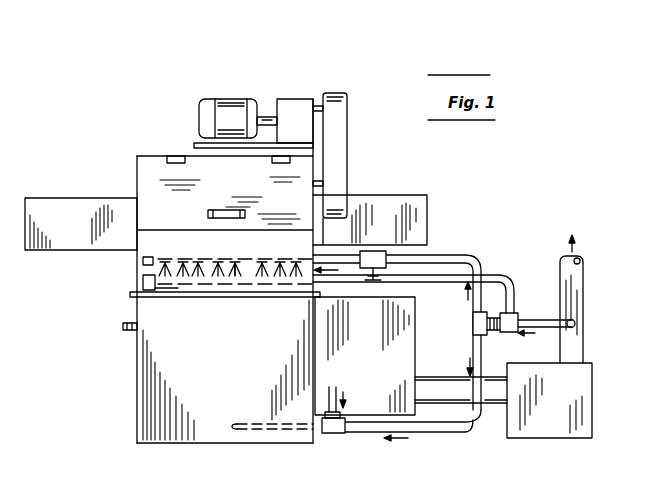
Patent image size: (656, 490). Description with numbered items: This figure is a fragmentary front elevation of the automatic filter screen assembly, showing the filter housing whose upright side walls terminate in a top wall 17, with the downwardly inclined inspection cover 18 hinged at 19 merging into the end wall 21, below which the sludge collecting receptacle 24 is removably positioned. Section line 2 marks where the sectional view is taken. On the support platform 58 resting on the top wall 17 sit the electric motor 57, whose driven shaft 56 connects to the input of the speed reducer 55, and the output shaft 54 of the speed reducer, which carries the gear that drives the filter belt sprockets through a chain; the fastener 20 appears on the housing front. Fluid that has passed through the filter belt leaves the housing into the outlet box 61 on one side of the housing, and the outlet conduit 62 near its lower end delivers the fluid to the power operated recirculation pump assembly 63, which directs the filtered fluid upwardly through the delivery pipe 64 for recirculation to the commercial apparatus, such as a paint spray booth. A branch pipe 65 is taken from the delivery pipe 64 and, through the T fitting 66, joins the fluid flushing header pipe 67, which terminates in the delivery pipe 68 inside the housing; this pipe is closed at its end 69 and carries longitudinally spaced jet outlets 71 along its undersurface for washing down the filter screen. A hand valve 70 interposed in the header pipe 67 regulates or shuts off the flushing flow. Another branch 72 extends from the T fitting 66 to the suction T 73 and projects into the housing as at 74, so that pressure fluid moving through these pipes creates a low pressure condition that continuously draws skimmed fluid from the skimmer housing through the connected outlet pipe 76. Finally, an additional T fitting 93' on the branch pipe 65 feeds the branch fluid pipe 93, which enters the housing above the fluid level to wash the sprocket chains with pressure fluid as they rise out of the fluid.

The section line 2- 2 is at (226, 75).
The top wall 17 is at (143, 156).
The inspection cover 18 is at (172, 180).
The hinge 19 is at (178, 163).
The fastener 20 is at (226, 210).
The end wall 21 is at (137, 248).
The sludge collecting receptacle 24 is at (146, 402).
The output shaft 54 is at (330, 93).
The speed reducer 55 is at (296, 115).
The driven shaft 56 is at (266, 117).
The electric motor 57 is at (228, 99).
The support platform 58 is at (194, 146).
The outlet box 61 is at (420, 326).
The outlet conduit 62 is at (444, 392).
The recirculation pump assembly 63 is at (542, 430).
The delivery pipe 64 is at (583, 298).
The branch pipe 65 is at (516, 313).
The T fitting 66 is at (473, 322).
The flushing header pipe 67 is at (436, 262).
The delivery pipe 68 is at (130, 295).
The closed end 69 is at (143, 262).
The hand valve 70 is at (373, 280).
The jet outlets 71 is at (238, 276).
The branch pipe 72 is at (454, 432).
The suction T 73 is at (334, 430).
The recirculation outlet 74 is at (234, 422).
The outlet pipe 76 is at (326, 386).
The branch fluid pipe 93 is at (416, 275).
The additional T fitting 93' is at (521, 345).